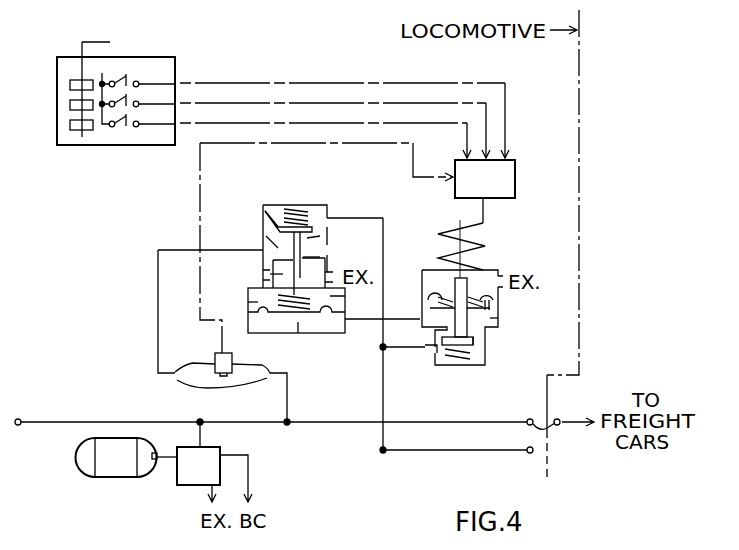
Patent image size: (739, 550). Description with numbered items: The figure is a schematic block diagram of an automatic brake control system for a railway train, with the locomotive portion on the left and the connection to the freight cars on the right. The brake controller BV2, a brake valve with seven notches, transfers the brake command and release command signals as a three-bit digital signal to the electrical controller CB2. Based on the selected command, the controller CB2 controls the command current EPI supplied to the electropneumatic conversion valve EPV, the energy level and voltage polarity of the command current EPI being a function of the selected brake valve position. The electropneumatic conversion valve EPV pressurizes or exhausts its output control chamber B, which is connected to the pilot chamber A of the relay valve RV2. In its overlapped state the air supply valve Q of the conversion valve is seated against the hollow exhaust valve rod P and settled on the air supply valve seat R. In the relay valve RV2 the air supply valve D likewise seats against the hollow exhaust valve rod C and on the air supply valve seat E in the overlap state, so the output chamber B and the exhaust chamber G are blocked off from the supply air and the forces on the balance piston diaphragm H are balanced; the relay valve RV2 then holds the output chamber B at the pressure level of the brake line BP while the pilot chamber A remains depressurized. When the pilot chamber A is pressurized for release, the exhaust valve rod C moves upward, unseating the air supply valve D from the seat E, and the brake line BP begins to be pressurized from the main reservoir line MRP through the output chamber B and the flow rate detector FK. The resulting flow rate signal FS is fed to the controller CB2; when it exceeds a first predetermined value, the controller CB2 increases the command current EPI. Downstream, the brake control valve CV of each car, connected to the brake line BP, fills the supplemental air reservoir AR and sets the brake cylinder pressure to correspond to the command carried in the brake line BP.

The brake controller BV2 is at (132, 56).
The electrical controller CB2 is at (485, 140).
The command current EPI is at (485, 215).
The electropneumatic conversion valve EPV is at (497, 270).
The relay valve RV2 is at (323, 203).
The flow rate signal FS is at (200, 222).
The flow rate detector FK is at (210, 387).
The brake line BP is at (82, 422).
The main reservoir line MRP is at (458, 452).
The supplemental air reservoir AR is at (127, 457).
The brake control valve CV is at (214, 462).
The air supply valve D is at (266, 213).
The output chamber B is at (266, 236).
The air supply valve seat E is at (320, 236).
The hollow exhaust valve rod C is at (320, 257).
The exhaust chamber G is at (270, 275).
The balance piston diaphragm H is at (248, 302).
The pilot chamber A is at (298, 322).
The air supply valve seat R is at (437, 336).
The hollow exhaust valve rod P is at (498, 320).
The air supply valve Q is at (477, 338).